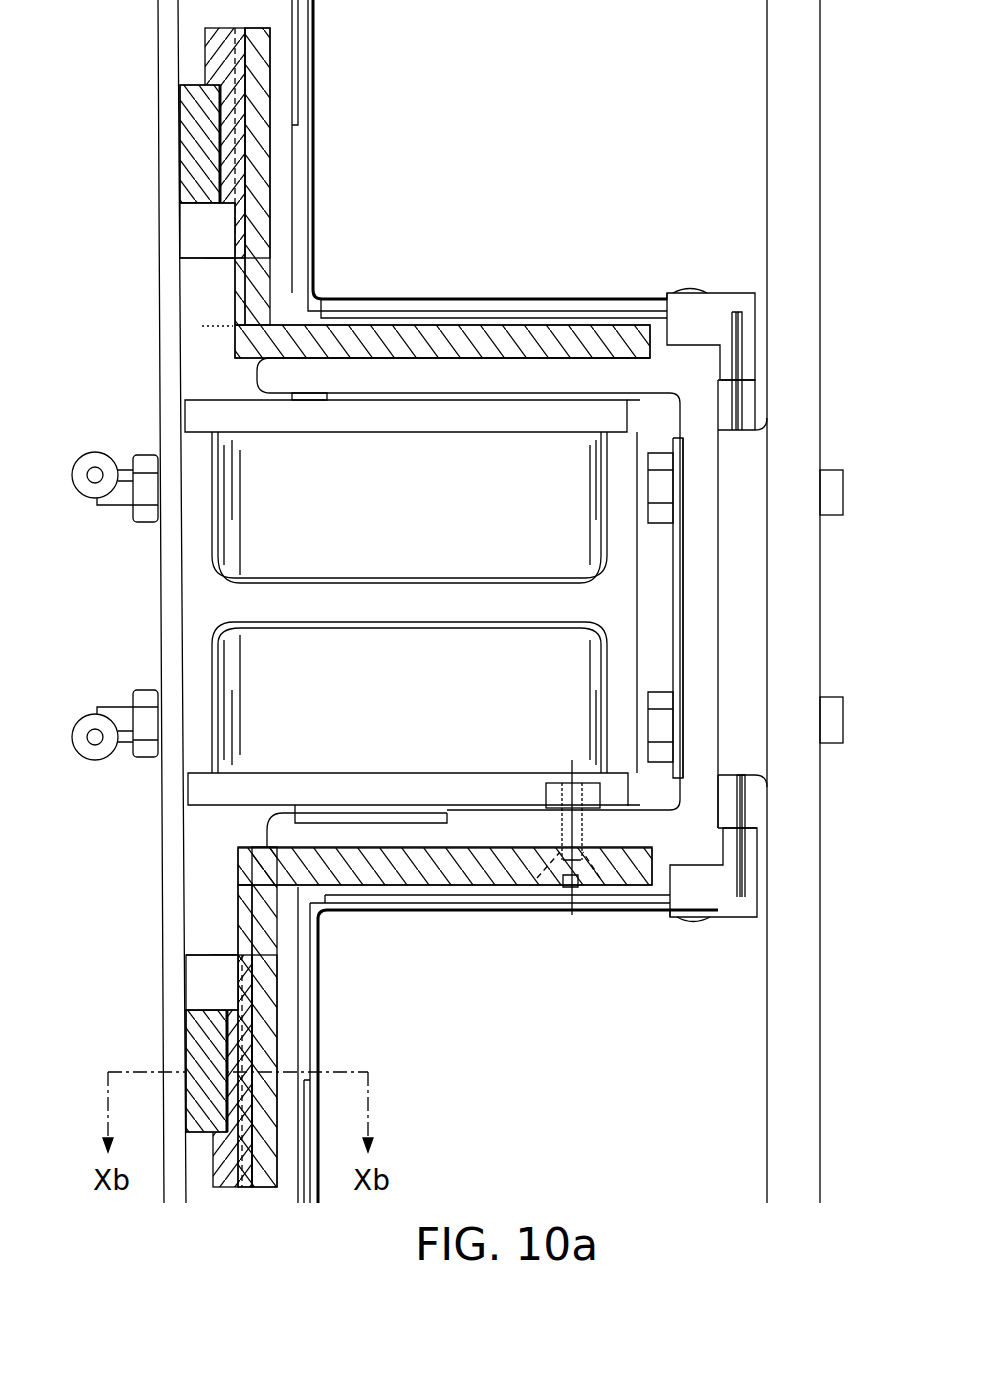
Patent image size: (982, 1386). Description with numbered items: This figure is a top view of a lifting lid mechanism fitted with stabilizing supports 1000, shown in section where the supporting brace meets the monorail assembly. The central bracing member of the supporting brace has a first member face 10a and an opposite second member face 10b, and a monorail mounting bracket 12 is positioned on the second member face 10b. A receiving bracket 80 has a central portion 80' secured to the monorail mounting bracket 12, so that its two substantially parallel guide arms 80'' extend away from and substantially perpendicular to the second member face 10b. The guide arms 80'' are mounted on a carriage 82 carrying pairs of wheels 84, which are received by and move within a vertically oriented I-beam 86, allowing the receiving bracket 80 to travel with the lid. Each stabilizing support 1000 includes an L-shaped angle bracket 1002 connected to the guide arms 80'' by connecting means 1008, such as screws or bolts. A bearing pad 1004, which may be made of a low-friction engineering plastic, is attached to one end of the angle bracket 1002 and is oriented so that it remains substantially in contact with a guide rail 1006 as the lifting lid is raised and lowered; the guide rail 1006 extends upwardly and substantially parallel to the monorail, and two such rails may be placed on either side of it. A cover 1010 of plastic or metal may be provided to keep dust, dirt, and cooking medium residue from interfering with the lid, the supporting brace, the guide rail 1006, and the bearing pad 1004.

The first member face 10a is at (820, 153).
The second member face 10b is at (766, 158).
The monorail mounting bracket 12 is at (745, 573).
The receiving bracket 80 is at (364, 665).
The central portion 80' is at (758, 608).
The guide arms 80'' is at (771, 605).
The carriage 82 is at (613, 412).
The wheels 84 is at (230, 523).
The I-beam 86 is at (205, 622).
The stabilizing support 1000 is at (428, 277).
The angle bracket 1002 is at (228, 333).
The bearing pad 1004 is at (203, 45).
The guide rail 1006 is at (188, 1022).
The connecting means 1008 is at (553, 833).
The cover 1010 is at (597, 297).